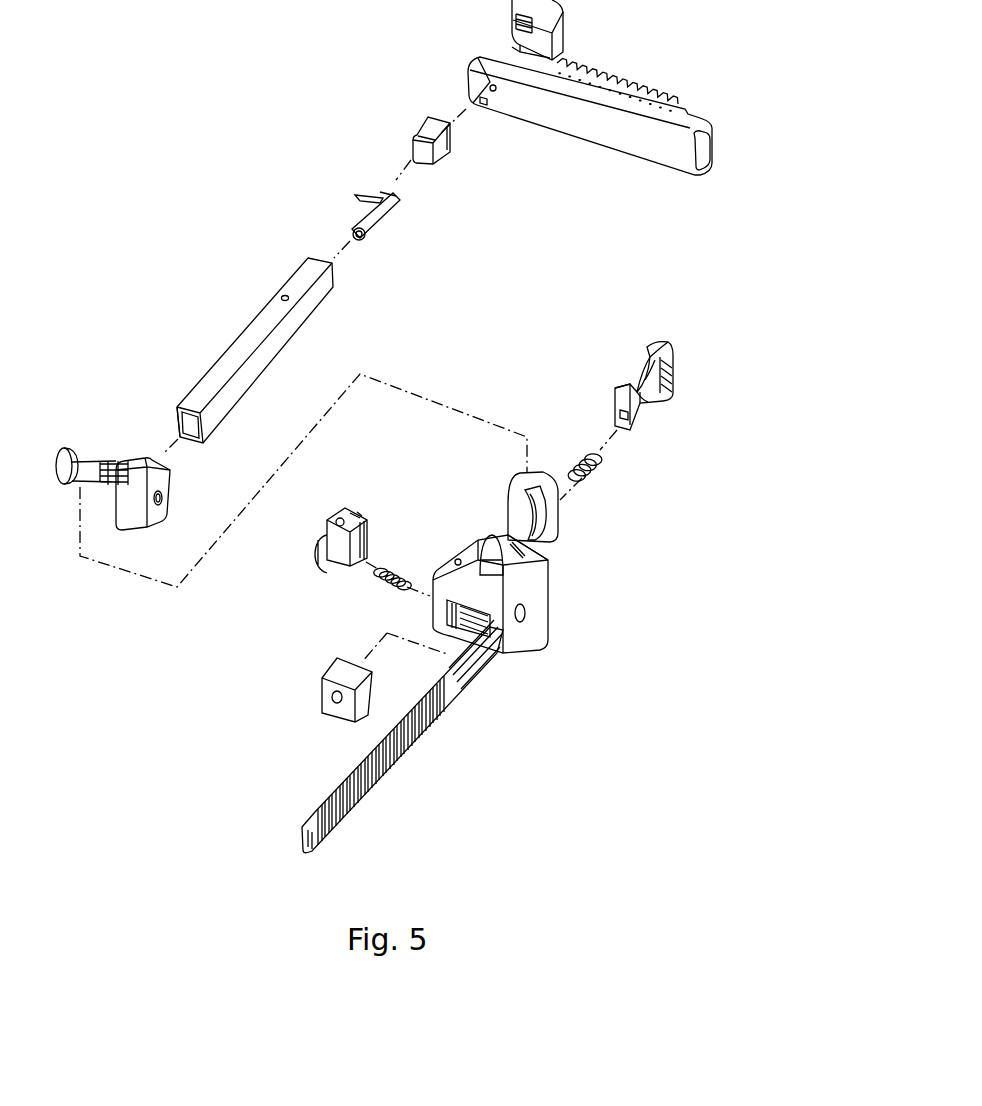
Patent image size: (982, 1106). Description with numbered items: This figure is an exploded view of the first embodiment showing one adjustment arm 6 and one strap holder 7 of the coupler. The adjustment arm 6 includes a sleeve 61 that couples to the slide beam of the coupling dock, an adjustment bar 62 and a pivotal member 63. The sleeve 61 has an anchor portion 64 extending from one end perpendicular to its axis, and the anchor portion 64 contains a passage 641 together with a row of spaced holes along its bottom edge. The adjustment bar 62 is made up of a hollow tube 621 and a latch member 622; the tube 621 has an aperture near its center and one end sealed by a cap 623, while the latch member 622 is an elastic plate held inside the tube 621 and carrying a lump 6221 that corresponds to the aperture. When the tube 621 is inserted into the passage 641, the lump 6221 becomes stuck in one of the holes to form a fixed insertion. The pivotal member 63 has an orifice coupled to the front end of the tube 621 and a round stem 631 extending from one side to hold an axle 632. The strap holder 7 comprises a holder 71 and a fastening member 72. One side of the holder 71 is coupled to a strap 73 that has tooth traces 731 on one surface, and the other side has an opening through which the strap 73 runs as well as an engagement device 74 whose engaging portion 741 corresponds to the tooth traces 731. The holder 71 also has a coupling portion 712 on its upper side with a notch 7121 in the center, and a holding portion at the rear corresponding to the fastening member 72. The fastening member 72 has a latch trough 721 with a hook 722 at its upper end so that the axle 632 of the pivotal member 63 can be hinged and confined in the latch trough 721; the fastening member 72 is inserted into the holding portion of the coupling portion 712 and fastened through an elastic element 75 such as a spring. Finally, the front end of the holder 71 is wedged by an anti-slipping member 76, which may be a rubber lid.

The adjustment arm 6 is at (152, 111).
The sleeve 61 is at (590, 85).
The adjustment bar 62 is at (217, 210).
The tube 621 is at (257, 338).
The latch member 622 is at (368, 224).
The lump 6221 is at (363, 242).
The cap 623 is at (410, 132).
The pivotal member 63 is at (147, 468).
The round stem 631 is at (113, 467).
The axle 632 is at (87, 457).
The anchor portion 64 is at (518, 33).
The passage 641 is at (482, 80).
The strap holder 7 is at (592, 658).
The holder 71 is at (535, 597).
The coupling portion 712 is at (546, 497).
The notch 7121 is at (518, 497).
The fastening member 72 is at (640, 375).
The latch trough 721 is at (640, 400).
The hook 722 is at (638, 390).
The strap 73 is at (389, 736).
The tooth traces 731 is at (390, 748).
The engagement device 74 is at (356, 534).
The engaging portion 741 is at (365, 540).
The elastic element 75 is at (602, 472).
The anti-slipping member 76 is at (328, 680).